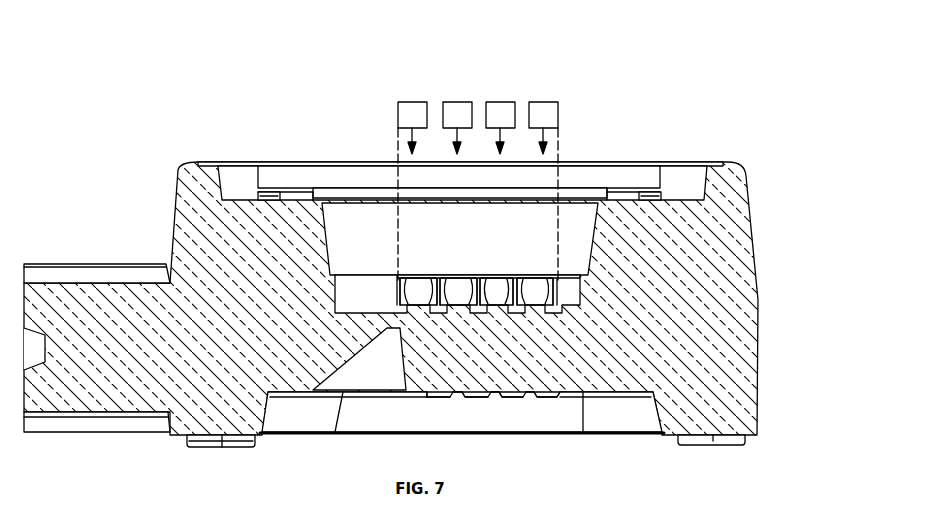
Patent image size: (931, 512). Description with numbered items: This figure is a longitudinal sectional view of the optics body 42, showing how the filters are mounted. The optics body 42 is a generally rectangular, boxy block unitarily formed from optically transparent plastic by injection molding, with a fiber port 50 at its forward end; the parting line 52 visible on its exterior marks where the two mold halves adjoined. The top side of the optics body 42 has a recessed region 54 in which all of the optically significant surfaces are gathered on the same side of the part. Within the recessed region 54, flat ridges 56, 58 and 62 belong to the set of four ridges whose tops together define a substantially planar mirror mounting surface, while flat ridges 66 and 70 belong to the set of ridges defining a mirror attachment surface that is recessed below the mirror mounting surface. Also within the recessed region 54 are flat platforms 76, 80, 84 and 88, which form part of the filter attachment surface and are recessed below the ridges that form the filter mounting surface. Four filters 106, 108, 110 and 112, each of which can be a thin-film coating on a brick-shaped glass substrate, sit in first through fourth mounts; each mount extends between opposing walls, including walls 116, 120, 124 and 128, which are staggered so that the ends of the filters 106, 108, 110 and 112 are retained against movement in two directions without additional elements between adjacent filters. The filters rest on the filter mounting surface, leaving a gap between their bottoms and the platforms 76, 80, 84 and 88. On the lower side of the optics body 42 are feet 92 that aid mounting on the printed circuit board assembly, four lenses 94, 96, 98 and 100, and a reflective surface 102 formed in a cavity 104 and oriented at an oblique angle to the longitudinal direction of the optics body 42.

The optics body 42 is at (152, 140).
The fiber port 50 is at (108, 433).
The parting line 52 is at (762, 346).
The recessed region 54 is at (460, 239).
The flat ridge 56 is at (616, 188).
The flat ridge 58 is at (302, 164).
The flat ridge 62 is at (331, 188).
The flat ridge 66 is at (268, 192).
The flat ridge 70 is at (657, 192).
The flat platform 76 is at (530, 283).
The flat platform 80 is at (490, 283).
The flat platform 84 is at (458, 283).
The flat platform 88 is at (417, 283).
The feet 92 is at (215, 448).
The lens 94 is at (430, 395).
The lens 96 is at (467, 398).
The lens 98 is at (508, 398).
The lens 100 is at (546, 396).
The reflective surface 102 is at (342, 372).
The cavity 104 is at (359, 359).
The filter 106 is at (405, 114).
The filter 108 is at (463, 112).
The filter 110 is at (493, 112).
The filter 112 is at (552, 113).
The wall 116 is at (425, 283).
The wall 120 is at (470, 283).
The wall 124 is at (500, 283).
The wall 128 is at (540, 283).